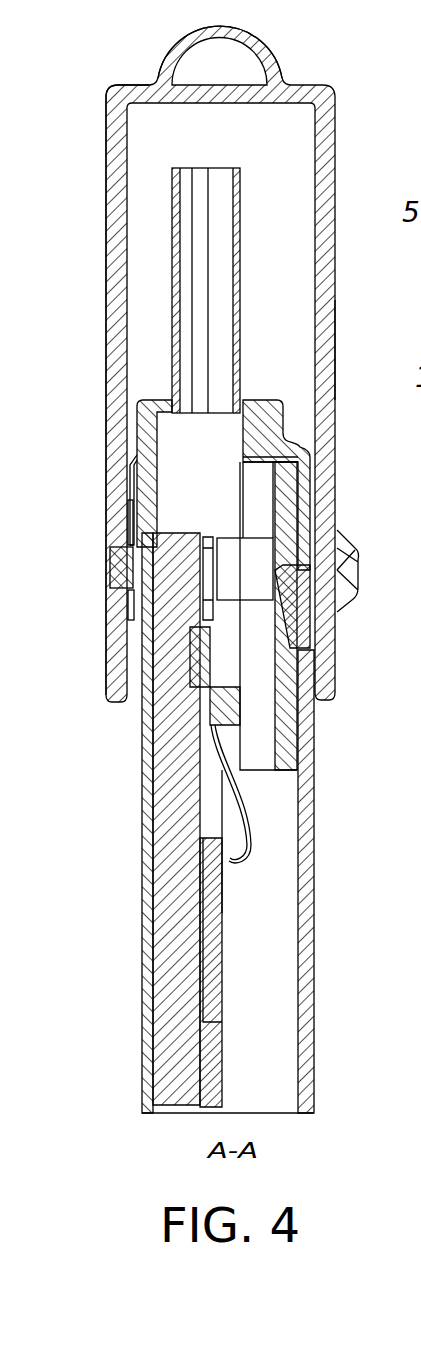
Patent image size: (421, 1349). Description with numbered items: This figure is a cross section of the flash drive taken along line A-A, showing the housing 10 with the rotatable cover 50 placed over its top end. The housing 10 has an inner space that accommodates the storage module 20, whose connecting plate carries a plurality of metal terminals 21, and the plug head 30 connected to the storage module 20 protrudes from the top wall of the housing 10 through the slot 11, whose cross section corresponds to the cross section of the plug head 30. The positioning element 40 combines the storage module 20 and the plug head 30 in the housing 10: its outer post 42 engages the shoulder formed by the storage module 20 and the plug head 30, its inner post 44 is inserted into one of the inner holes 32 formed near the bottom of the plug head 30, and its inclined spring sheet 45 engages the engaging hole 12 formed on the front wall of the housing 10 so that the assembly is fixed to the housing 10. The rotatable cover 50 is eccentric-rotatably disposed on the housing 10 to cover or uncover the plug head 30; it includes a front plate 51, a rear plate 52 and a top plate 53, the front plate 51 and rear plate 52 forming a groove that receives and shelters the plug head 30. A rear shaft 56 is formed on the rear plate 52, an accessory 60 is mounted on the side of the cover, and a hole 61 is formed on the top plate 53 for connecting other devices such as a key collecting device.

The housing 10 is at (142, 905).
The slot 11 is at (247, 400).
The engaging hole 12 is at (313, 677).
The storage module 20 is at (170, 1002).
The metal terminals 21 is at (250, 848).
The plug head 30 is at (243, 265).
The inner holes 32 is at (205, 598).
The positioning element 40 is at (283, 750).
The outer post 42 is at (258, 458).
The inner post 44 is at (240, 565).
The inclined spring sheet 45 is at (295, 617).
The rotatable cover 50 is at (97, 282).
The front plate 51 is at (336, 152).
The rear plate 52 is at (106, 220).
The top plate 53 is at (145, 85).
The rear shaft 56 is at (133, 570).
The accessory 60 is at (350, 570).
The hole 61 is at (238, 63).